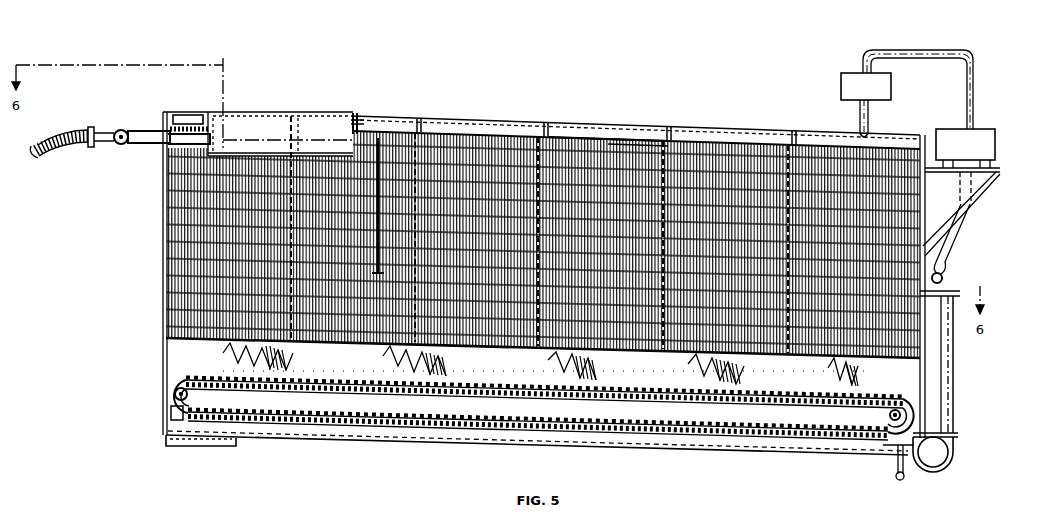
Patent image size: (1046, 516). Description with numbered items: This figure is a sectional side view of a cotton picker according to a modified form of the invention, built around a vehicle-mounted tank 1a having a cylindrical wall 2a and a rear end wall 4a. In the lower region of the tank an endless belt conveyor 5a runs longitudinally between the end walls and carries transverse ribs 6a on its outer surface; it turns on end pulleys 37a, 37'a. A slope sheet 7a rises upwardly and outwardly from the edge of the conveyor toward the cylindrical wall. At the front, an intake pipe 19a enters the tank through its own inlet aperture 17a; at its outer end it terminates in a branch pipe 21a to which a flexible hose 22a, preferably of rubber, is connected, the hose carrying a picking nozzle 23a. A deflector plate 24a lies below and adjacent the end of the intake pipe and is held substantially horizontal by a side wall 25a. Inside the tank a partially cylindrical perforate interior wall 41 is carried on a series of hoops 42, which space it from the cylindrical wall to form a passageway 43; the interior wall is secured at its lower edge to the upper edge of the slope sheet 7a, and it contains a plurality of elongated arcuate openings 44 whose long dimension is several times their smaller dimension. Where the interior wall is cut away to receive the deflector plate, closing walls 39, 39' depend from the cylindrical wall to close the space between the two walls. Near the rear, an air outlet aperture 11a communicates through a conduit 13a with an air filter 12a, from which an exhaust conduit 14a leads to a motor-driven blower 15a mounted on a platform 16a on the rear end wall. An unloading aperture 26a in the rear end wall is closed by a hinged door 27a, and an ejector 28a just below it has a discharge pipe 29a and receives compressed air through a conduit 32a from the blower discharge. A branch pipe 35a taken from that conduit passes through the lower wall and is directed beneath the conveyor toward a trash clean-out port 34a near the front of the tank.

The tank 1a is at (431, 102).
The cylindrical wall 2a is at (486, 112).
The rear end wall 4a is at (938, 248).
The belt conveyor 5a is at (161, 386).
The transverse ribs 6a is at (166, 373).
The slope sheet 7a is at (166, 340).
The air outlet aperture 11a is at (862, 126).
The air filter 12a is at (832, 74).
The conduit 13a is at (851, 108).
The exhaust conduit 14a is at (903, 42).
The blower 15a is at (988, 137).
The platform 16a is at (992, 162).
The inlet aperture 17a is at (152, 138).
The intake pipe 19a is at (129, 122).
The branch pipe 21a is at (96, 121).
The flexible hose 22a is at (30, 126).
The picking nozzle 23a is at (31, 153).
The deflector plate 24a is at (224, 145).
The side wall 25a is at (265, 124).
The unloading aperture 26a is at (920, 370).
The hinged door 27a is at (915, 346).
The ejector 28a is at (941, 445).
The discharge pipe 29a is at (947, 396).
The conduit 32a is at (935, 270).
The trash clean-out port 34a is at (197, 439).
The branch pipe 35a is at (897, 470).
The end pulley 37a is at (181, 388).
The end pulley 37'a is at (872, 415).
The closing wall 39 is at (189, 108).
The closing wall 39' is at (350, 107).
The perforate interior wall 41 is at (579, 118).
The hoops 42 is at (541, 120).
The passageway 43 is at (609, 126).
The elongated arcuate openings 44 is at (633, 133).